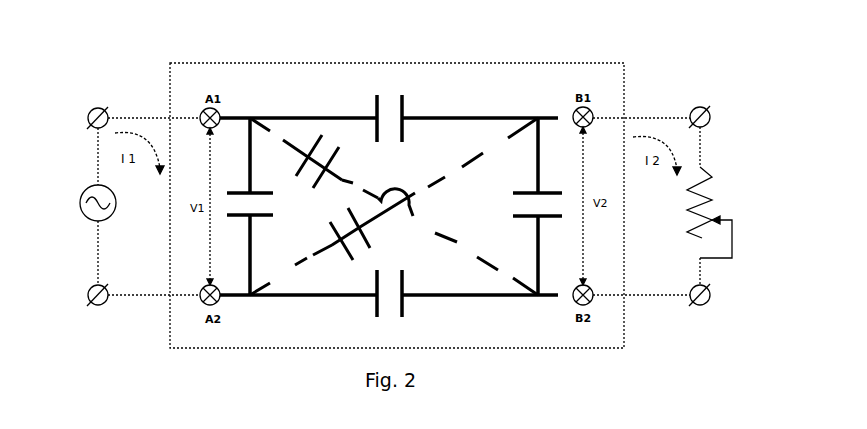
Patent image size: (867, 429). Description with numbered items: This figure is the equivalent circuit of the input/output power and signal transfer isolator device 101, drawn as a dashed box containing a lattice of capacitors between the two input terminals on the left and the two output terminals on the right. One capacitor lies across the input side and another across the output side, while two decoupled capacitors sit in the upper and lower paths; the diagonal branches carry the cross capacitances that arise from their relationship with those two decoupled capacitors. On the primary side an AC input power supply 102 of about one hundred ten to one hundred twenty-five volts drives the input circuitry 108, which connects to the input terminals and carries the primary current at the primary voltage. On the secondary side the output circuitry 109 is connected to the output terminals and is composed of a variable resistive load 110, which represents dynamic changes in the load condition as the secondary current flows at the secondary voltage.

The input/output power and signal transfer isolator device 101 is at (481, 63).
The AC input power supply 102 is at (84, 191).
The input circuitry 108 is at (130, 115).
The output circuitry 109 is at (704, 141).
The variable resistive load 110 is at (708, 201).